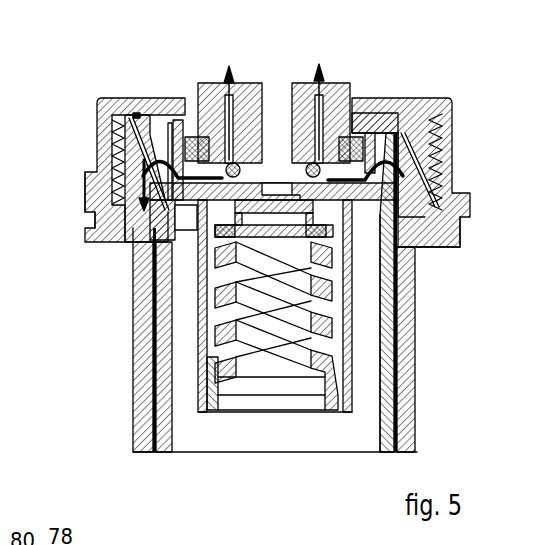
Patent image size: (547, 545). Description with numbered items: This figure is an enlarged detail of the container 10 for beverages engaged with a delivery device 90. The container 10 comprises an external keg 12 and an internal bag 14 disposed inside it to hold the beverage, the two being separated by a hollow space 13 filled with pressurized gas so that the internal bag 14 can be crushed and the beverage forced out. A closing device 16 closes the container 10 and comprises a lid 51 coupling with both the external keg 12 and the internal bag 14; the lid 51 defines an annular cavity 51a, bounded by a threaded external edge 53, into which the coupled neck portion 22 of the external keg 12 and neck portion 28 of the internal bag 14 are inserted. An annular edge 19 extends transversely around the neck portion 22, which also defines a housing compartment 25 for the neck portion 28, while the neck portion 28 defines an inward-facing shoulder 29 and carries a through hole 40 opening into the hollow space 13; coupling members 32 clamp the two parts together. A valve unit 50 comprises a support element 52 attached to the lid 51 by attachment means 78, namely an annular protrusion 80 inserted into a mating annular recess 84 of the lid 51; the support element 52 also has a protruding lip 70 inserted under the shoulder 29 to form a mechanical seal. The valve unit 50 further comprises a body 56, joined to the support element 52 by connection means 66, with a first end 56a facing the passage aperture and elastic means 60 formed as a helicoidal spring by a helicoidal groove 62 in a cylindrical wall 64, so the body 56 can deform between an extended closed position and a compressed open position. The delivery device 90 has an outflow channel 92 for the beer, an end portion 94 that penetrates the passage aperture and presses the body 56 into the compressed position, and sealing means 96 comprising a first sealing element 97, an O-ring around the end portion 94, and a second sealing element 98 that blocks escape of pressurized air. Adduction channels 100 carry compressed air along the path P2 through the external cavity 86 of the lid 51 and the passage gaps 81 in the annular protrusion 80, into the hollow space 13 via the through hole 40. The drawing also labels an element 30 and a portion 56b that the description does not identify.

The container 10 is at (492, 220).
The external keg 12 is at (145, 433).
The hollow space 13 is at (393, 450).
The internal bag 14 is at (162, 448).
The closing device 16 is at (461, 121).
The annular edge 19 is at (103, 235).
The neck portion 22 is at (130, 253).
The housing compartment 25 is at (417, 253).
The neck portion 28 is at (133, 285).
The shoulder 29 is at (165, 228).
The threaded insert 30 is at (126, 128).
The coupling members 32 is at (125, 136).
The through hole 40 is at (160, 170).
The valve unit 50 is at (280, 417).
The lid 51 is at (88, 143).
The annular cavity 51a is at (164, 125).
The support element 52 is at (398, 290).
The external edge 53 is at (90, 207).
The body 56 is at (347, 372).
The first end 56a is at (385, 310).
The retainer 56b is at (341, 416).
The elastic means 60 is at (303, 317).
The helicoidal groove 62 is at (268, 360).
The wall 64 is at (252, 322).
The connection means 66 is at (202, 416).
The protruding lip 70 is at (167, 205).
The attachment means 78 is at (440, 116).
The annular protrusion 80 is at (432, 120).
The passage gaps 81 is at (150, 176).
The annular recess 84 is at (386, 145).
The external cavity 86 is at (375, 114).
The delivery device 90 is at (198, 78).
The outflow channel 92 is at (291, 102).
The end portion 94 is at (300, 200).
The sealing means 96 is at (240, 160).
The first sealing element 97 is at (452, 240).
The second sealing element 98 is at (307, 191).
The adduction channel 100 is at (227, 127).
The path P2 is at (238, 145).